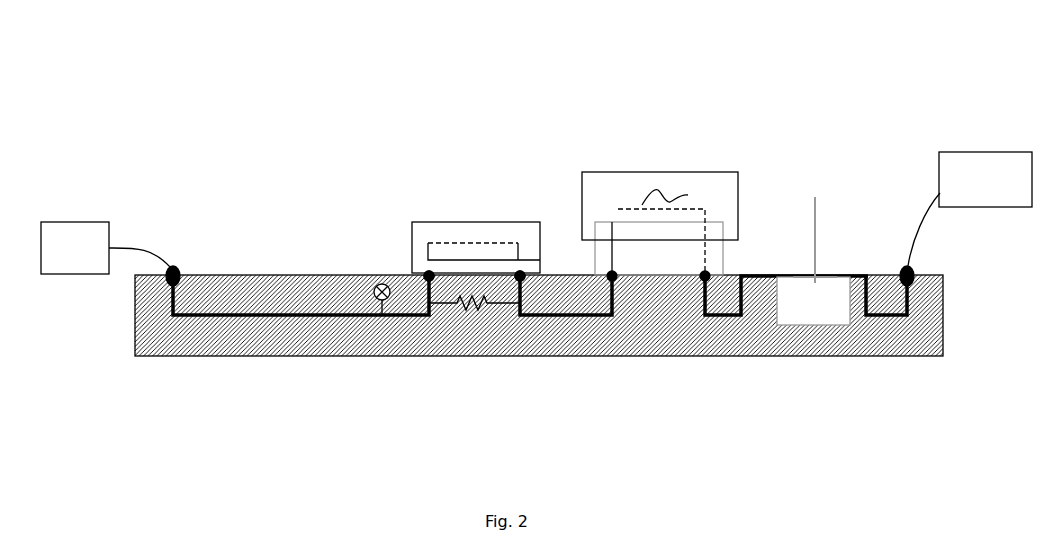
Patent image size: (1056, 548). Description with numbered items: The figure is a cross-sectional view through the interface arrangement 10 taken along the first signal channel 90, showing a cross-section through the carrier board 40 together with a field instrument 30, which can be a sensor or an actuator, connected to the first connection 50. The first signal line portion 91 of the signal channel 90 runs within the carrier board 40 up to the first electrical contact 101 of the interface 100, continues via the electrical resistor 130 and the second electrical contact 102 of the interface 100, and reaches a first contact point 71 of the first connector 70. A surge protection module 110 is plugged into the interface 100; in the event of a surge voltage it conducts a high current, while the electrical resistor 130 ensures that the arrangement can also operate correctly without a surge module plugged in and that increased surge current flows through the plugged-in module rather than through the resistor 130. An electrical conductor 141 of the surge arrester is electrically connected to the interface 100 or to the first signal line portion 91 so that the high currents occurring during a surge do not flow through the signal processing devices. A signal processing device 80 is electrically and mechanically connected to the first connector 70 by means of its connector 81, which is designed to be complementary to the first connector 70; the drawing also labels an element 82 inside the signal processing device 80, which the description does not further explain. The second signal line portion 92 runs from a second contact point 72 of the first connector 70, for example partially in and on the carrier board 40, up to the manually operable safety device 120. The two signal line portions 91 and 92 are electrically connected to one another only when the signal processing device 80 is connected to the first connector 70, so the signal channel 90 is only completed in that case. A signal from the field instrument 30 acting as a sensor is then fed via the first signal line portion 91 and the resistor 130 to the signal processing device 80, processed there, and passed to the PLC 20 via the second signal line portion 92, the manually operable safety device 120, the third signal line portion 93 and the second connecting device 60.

The interface arrangement 10 is at (291, 53).
The PLC 20 is at (975, 152).
The field instrument 30 is at (72, 275).
The carrier board 40 is at (943, 300).
The first connection 50 is at (178, 266).
The second connecting device 60 is at (900, 270).
The first connector 70 is at (595, 275).
The first contact point 71 is at (618, 272).
The second contact point 72 is at (702, 272).
The signal processing device 80 is at (662, 186).
The connector 81 is at (610, 222).
The sensing element 82 is at (679, 197).
The signal channel 90 is at (555, 323).
The first signal line portion 91 is at (225, 318).
The second signal line portion 92 is at (722, 318).
The third signal line portion 93 is at (893, 318).
The interface 100 is at (428, 272).
The first electrical contact 101 is at (425, 268).
The second electrical contact 102 is at (525, 276).
The surge protection module 110 is at (425, 222).
The manually operable safety device 120 is at (815, 222).
The electrical resistor 130 is at (497, 305).
The electrical conductor 141 is at (375, 298).